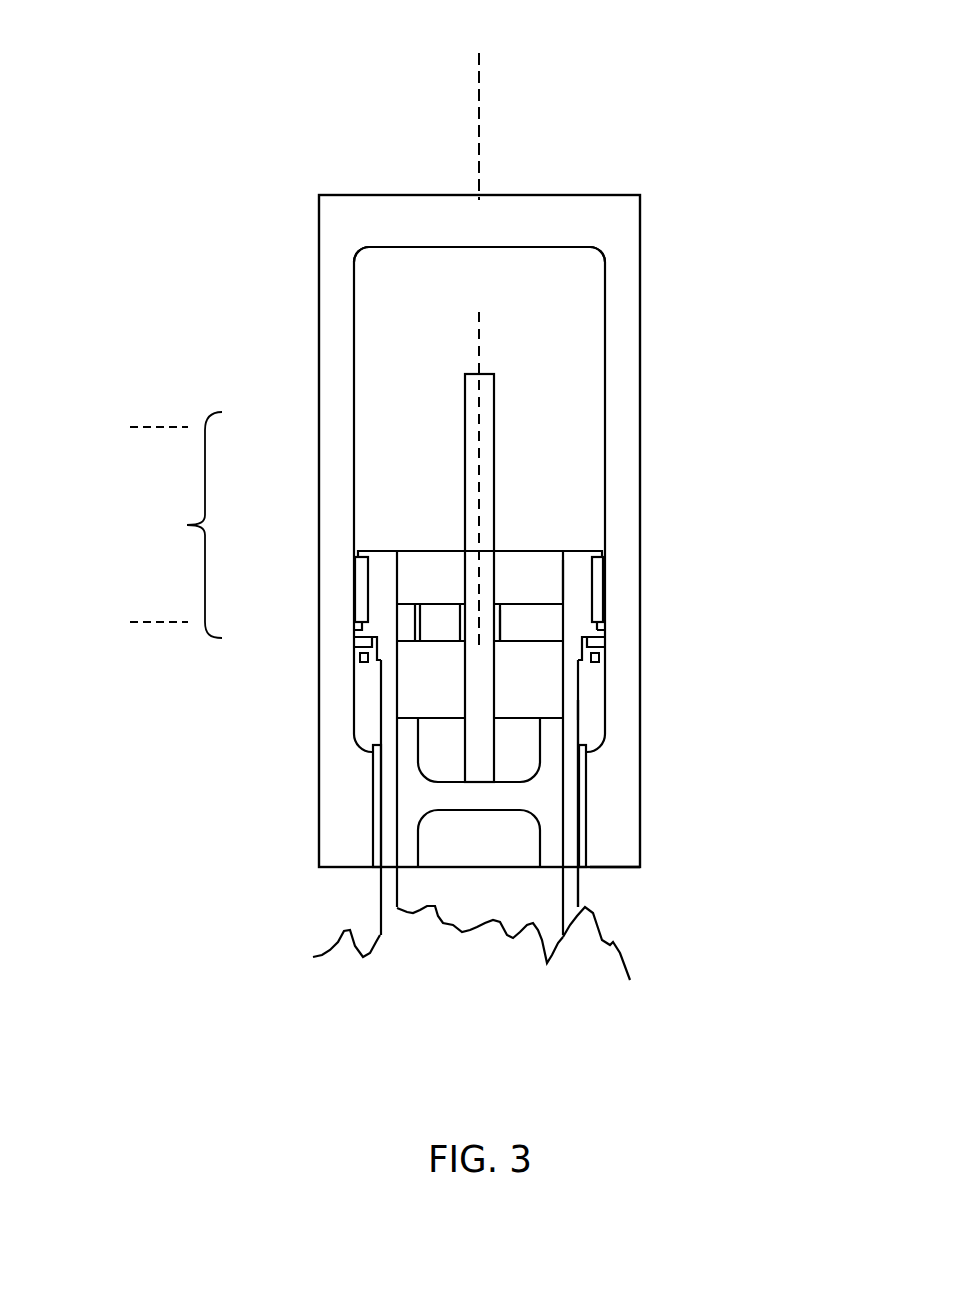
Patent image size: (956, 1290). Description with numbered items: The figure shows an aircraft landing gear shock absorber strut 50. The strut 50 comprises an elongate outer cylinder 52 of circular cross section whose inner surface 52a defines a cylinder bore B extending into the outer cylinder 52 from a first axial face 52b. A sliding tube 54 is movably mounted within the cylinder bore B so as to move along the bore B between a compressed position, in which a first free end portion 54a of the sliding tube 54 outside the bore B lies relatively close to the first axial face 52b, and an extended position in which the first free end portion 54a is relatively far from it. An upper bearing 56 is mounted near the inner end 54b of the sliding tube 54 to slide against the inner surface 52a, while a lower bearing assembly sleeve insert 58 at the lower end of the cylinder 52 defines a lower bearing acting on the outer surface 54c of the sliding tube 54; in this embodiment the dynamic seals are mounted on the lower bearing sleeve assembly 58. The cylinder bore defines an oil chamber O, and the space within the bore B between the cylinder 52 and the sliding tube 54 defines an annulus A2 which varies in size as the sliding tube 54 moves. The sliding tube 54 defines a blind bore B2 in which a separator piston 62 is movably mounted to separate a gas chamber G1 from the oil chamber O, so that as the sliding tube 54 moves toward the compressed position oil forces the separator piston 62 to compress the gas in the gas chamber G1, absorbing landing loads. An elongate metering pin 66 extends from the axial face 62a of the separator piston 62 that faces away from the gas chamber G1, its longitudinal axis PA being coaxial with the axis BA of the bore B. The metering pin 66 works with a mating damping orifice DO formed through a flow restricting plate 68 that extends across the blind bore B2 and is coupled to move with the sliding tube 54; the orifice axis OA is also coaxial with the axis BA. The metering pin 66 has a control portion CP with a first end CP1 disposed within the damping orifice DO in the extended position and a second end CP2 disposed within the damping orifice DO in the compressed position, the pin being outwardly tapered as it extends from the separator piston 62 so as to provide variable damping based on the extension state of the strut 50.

The shock absorber strut 50 is at (545, 531).
The outer cylinder 52 is at (622, 345).
The inner surface 52a is at (605, 425).
The first axial face 52b is at (608, 868).
The sliding tube 54 is at (491, 707).
The first free end portion 54a is at (437, 922).
The inner end 54b is at (408, 550).
The outer surface 54c is at (581, 850).
The upper bearing 56 is at (595, 592).
The lower bearing assembly sleeve insert 58 is at (581, 813).
The separator piston 62 is at (407, 797).
The axial face 62a is at (413, 703).
The metering pin 66 is at (463, 437).
The flow restricting plate 68 is at (520, 610).
The axis of the bore BA is at (479, 103).
The longitudinal axis PA is at (479, 461).
The orifice axis OA is at (480, 644).
The cylinder bore B is at (387, 257).
The oil chamber O is at (523, 270).
The blind bore B2 is at (553, 580).
The damping orifice DO is at (497, 627).
The annulus A2 is at (593, 718).
The gas chamber G1 is at (510, 908).
The control portion CP is at (186, 525).
The first end CP1 is at (134, 624).
The second end CP2 is at (134, 429).